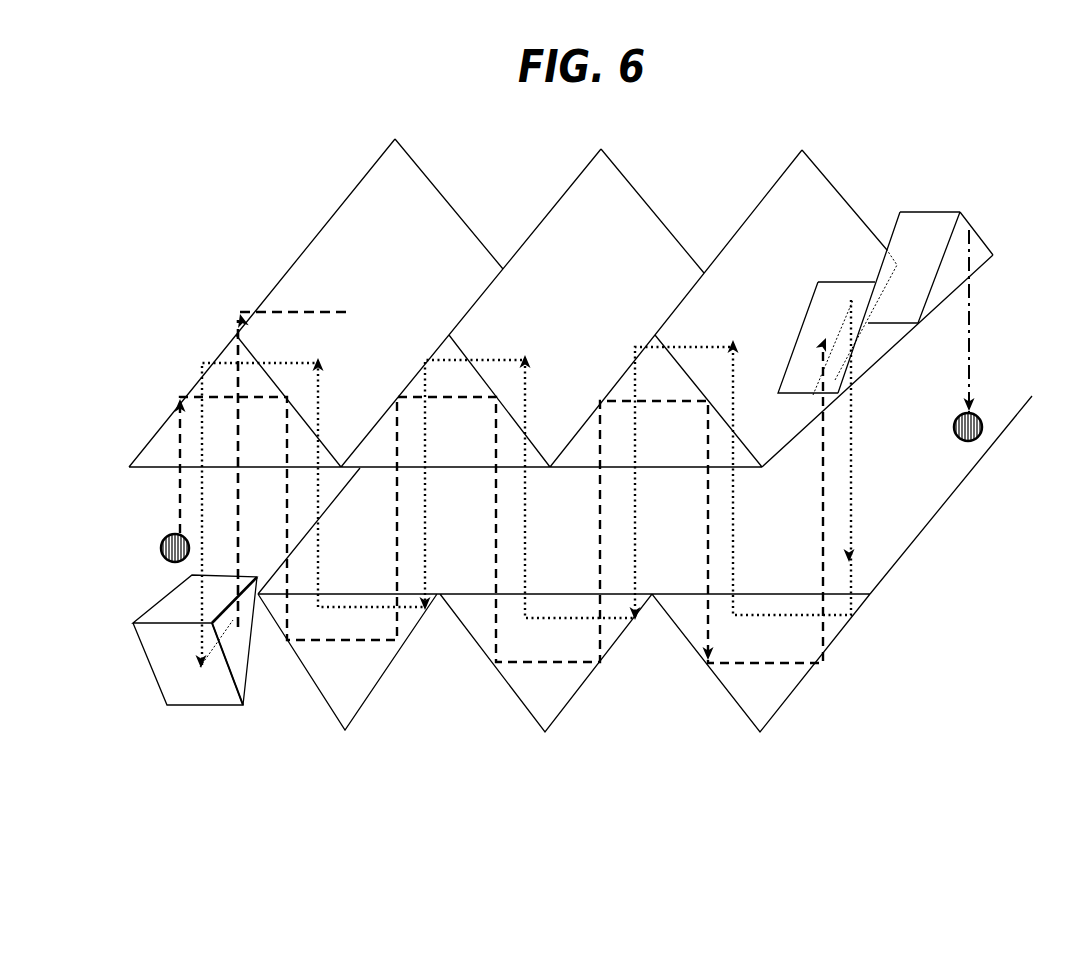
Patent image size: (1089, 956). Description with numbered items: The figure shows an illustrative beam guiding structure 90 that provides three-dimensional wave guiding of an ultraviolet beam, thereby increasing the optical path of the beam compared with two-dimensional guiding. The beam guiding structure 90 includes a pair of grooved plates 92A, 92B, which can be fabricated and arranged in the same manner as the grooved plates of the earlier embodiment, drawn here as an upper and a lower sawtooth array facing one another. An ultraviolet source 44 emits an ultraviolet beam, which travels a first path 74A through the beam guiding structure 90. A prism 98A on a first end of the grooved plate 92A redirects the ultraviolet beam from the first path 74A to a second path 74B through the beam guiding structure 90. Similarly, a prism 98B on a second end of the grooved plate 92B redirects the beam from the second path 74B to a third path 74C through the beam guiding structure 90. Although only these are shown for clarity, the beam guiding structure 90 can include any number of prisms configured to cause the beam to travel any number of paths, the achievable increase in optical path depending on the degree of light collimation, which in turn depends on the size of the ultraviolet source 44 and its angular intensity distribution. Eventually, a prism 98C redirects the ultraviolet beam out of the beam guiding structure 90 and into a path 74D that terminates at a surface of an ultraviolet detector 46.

The beam guiding structure 90 is at (177, 157).
The grooved plate 92A is at (272, 255).
The grooved plate 92B is at (897, 607).
The prism 98A is at (877, 343).
The prism 98B is at (167, 672).
The prism 98C is at (978, 260).
The first path 74A is at (178, 490).
The second path 74B is at (856, 473).
The third path 74C is at (237, 352).
The path 74D is at (975, 337).
The ultraviolet source 44 is at (165, 562).
The ultraviolet detector 46 is at (982, 442).